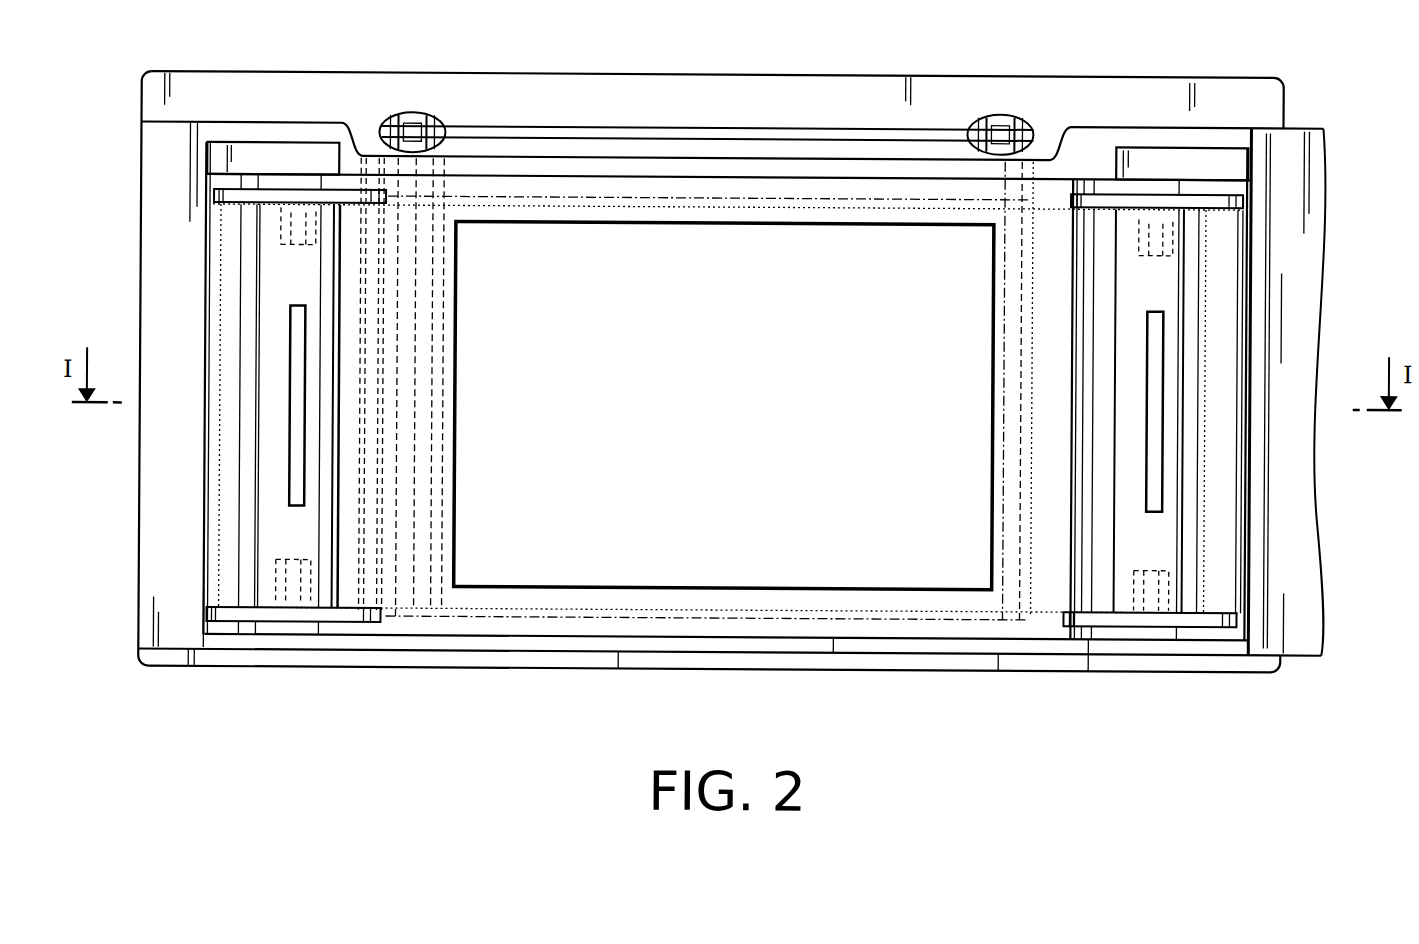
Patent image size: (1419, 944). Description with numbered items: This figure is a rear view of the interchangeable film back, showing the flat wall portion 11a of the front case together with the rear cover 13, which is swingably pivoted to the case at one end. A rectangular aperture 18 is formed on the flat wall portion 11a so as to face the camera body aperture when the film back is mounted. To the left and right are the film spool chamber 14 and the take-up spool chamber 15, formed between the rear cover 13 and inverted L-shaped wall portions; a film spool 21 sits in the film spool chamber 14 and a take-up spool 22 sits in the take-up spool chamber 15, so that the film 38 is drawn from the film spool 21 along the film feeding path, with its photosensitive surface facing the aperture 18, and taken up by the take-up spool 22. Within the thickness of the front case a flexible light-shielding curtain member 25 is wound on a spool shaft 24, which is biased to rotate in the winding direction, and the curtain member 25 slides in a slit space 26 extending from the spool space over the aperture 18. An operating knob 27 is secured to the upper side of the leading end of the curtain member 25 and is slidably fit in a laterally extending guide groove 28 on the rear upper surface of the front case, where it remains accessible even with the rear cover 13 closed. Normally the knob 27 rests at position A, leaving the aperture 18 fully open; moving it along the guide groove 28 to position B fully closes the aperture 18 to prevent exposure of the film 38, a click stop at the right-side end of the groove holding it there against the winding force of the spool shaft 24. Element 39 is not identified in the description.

The flat wall portion 11a is at (674, 644).
The rear cover 13 is at (1308, 553).
The film spool chamber 14 is at (217, 284).
The take-up spool chamber 15 is at (1232, 457).
The rectangular aperture 18 is at (846, 585).
The film spool 21 is at (274, 465).
The take-up spool 22 is at (1168, 274).
The spool shaft 24 is at (376, 515).
The light-shielding curtain member 25 is at (748, 198).
The slit space 26 is at (690, 199).
The operating knob 27 is at (435, 131).
The guide groove 28 is at (911, 128).
The film 38 is at (621, 207).
The lower plate 39 is at (371, 633).